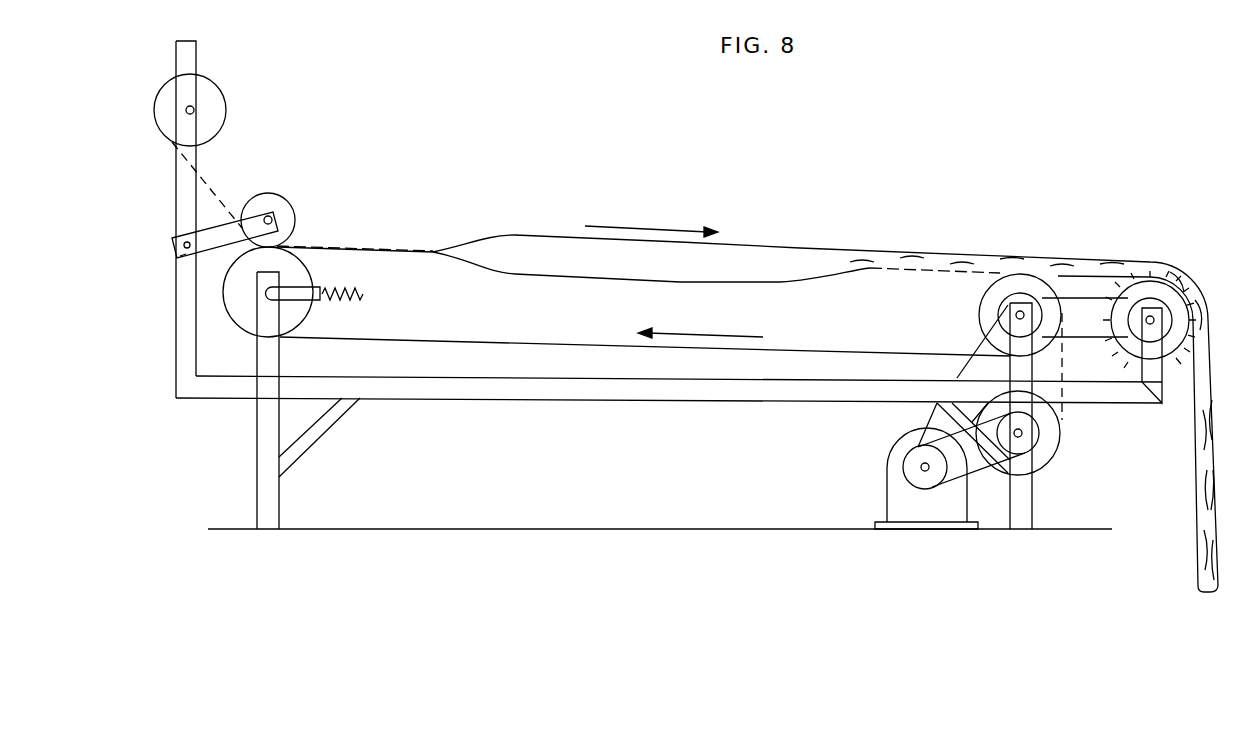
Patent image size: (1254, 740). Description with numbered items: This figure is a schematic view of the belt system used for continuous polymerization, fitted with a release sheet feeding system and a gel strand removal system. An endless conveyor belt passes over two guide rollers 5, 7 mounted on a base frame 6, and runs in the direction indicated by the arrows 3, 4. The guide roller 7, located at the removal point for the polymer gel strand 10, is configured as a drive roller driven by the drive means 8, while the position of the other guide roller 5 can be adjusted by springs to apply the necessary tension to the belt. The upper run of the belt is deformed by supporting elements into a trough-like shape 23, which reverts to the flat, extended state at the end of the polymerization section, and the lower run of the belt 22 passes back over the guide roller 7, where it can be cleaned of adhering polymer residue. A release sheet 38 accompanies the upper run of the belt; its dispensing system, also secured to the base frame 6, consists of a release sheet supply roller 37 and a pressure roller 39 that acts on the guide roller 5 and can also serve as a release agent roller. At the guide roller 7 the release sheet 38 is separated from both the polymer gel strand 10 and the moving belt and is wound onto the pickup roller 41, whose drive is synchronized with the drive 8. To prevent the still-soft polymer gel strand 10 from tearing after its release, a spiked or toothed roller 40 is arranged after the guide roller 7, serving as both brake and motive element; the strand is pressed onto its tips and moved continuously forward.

The arrow 3 is at (640, 227).
The arrow 4 is at (730, 336).
The guide roller 5 is at (236, 300).
The base frame 6 is at (268, 384).
The guide roller 7 is at (1008, 272).
The drive means 8 is at (905, 481).
The polymer gel strand 10 is at (930, 248).
The lower run of the belt 22 is at (500, 352).
The trough-like shape 23 is at (540, 240).
The release sheet supply roller 37 is at (227, 100).
The release sheet 38 is at (216, 186).
The pressure roller 39 is at (285, 206).
The spiked or toothed roller 40 is at (1165, 290).
The pickup roller 41 is at (1050, 460).